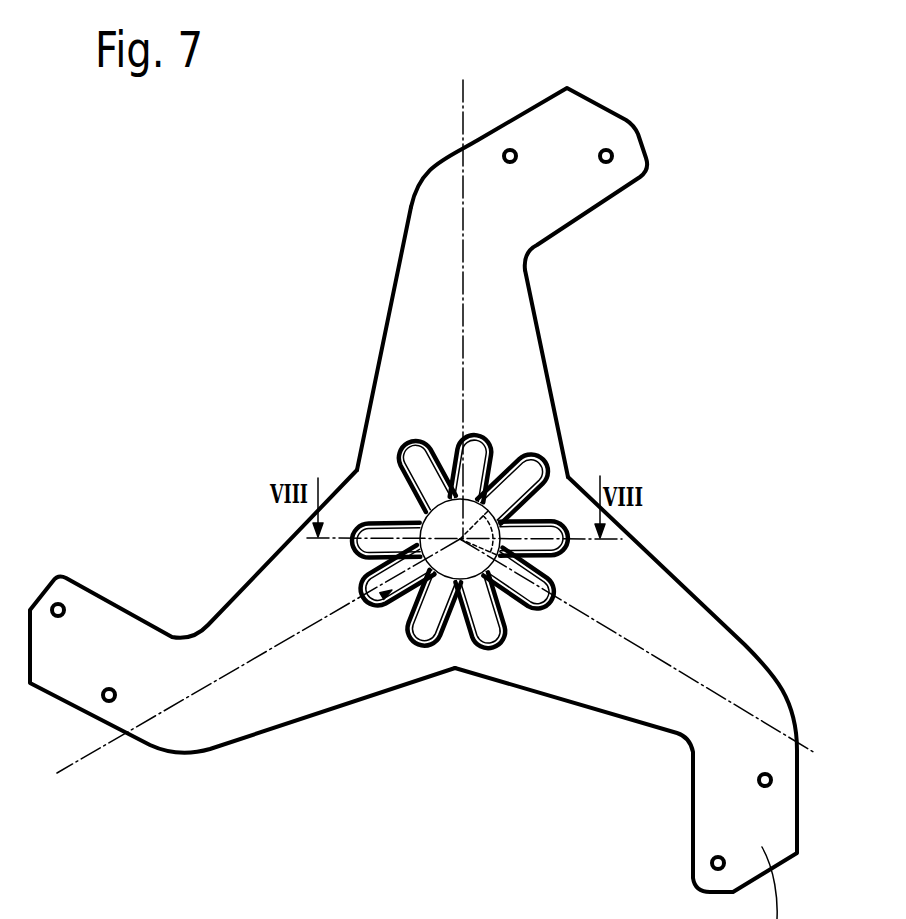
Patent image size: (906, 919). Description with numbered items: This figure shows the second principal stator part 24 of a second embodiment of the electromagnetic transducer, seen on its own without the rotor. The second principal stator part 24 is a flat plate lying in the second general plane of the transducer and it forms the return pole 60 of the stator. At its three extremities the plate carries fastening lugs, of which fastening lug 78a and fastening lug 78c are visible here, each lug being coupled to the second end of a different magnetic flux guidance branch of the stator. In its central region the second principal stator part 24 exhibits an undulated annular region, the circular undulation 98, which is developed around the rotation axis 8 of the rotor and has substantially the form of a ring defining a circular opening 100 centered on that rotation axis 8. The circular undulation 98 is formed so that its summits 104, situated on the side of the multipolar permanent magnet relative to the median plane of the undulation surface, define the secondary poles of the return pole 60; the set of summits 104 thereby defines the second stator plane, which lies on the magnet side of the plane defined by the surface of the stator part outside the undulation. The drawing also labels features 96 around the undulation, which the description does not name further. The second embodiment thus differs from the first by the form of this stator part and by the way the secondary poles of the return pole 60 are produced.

The rotation axis 8 is at (420, 510).
The second principal stator part 24 is at (505, 350).
The return pole 60 is at (413, 503).
The fastening lug 78a is at (92, 623).
The fastening lug 78c is at (575, 117).
The radial slot 96 is at (520, 487).
The circular undulation 98 is at (527, 633).
The circular opening 100 is at (462, 578).
The summits 104 is at (403, 453).